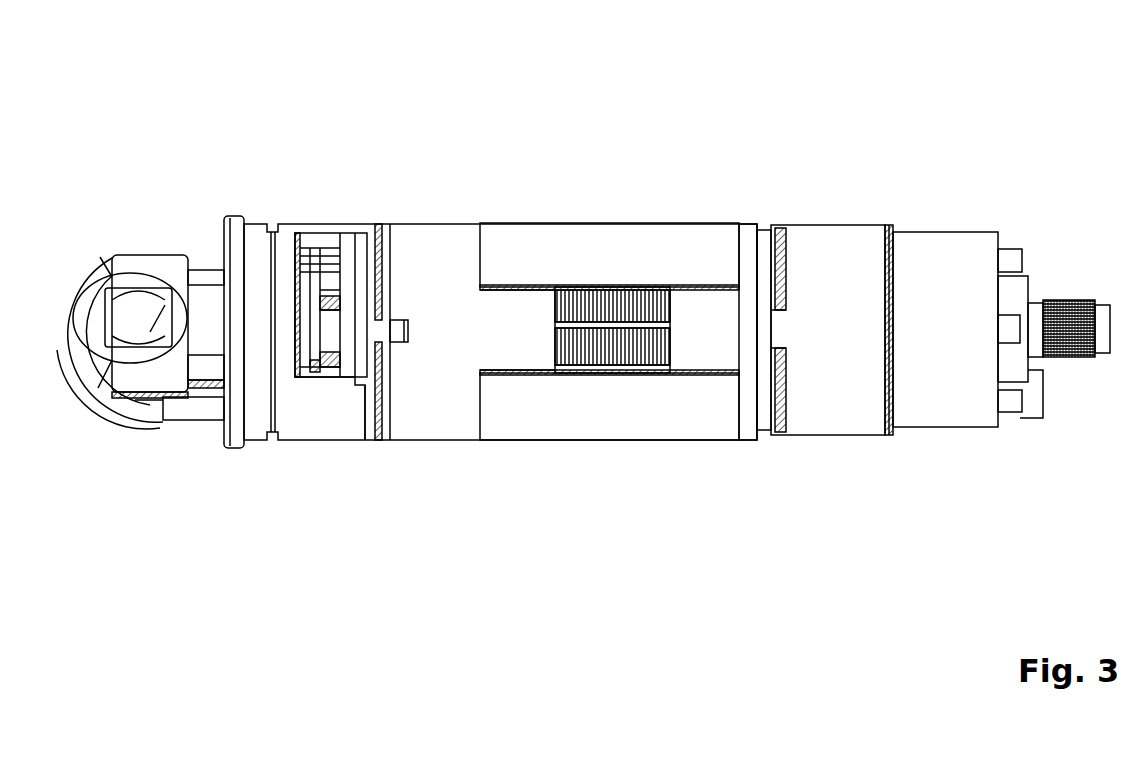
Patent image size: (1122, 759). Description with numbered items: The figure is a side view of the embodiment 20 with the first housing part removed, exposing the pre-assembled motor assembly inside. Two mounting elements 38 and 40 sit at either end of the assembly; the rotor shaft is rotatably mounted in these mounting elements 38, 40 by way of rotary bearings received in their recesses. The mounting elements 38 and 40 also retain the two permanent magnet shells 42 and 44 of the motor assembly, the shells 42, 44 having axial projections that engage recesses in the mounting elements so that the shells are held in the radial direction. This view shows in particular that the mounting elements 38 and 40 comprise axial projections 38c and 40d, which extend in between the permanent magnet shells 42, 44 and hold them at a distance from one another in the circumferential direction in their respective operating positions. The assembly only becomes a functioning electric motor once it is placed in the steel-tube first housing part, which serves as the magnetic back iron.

The actuator assembly 20 is at (1013, 127).
The mounting element 38 is at (435, 248).
The axial projection 38c is at (522, 338).
The mounting element 40 is at (747, 233).
The axial projection 40d is at (705, 332).
The permanent magnet shell 42 is at (600, 250).
The permanent magnet shell 44 is at (607, 413).